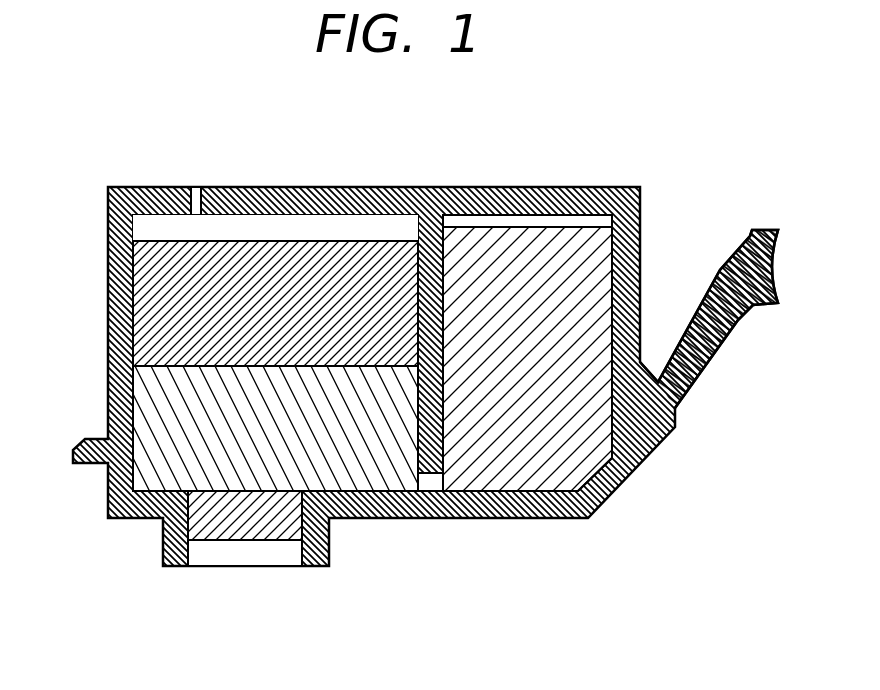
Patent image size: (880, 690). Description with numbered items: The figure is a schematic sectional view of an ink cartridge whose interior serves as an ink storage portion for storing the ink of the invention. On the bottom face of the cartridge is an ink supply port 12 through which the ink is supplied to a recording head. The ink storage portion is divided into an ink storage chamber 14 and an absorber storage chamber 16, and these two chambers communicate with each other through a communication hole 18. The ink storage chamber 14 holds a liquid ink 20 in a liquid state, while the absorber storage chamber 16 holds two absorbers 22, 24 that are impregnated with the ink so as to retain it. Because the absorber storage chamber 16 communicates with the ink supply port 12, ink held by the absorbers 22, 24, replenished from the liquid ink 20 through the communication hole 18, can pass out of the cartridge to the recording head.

The ink supply port 12 is at (242, 553).
The ink storage chamber 14 is at (578, 224).
The absorber storage chamber 16 is at (258, 232).
The communication hole 18 is at (430, 483).
The liquid ink 20 is at (531, 452).
The absorber 22 is at (150, 406).
The absorber 24 is at (185, 302).